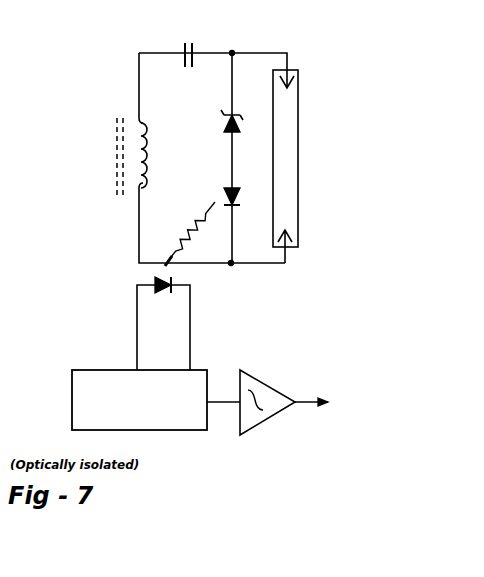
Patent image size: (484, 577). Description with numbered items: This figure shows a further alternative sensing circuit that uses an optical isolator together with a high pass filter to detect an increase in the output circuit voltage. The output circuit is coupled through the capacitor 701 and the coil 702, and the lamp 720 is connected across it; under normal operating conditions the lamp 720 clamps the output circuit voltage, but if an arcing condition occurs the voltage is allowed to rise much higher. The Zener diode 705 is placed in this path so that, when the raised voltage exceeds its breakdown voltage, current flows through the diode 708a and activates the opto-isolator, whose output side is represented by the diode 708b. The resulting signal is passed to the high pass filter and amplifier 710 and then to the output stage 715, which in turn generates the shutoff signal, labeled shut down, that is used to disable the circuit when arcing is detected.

The capacitor 701 is at (180, 41).
The inductor coil 702 is at (99, 156).
The zener diode 705 is at (206, 123).
The diode with resistor 708a is at (202, 225).
The diode 708b is at (166, 323).
The HPF and amplifier 710 is at (156, 415).
The comparator amplifier 715 is at (293, 411).
The load 720 is at (313, 158).